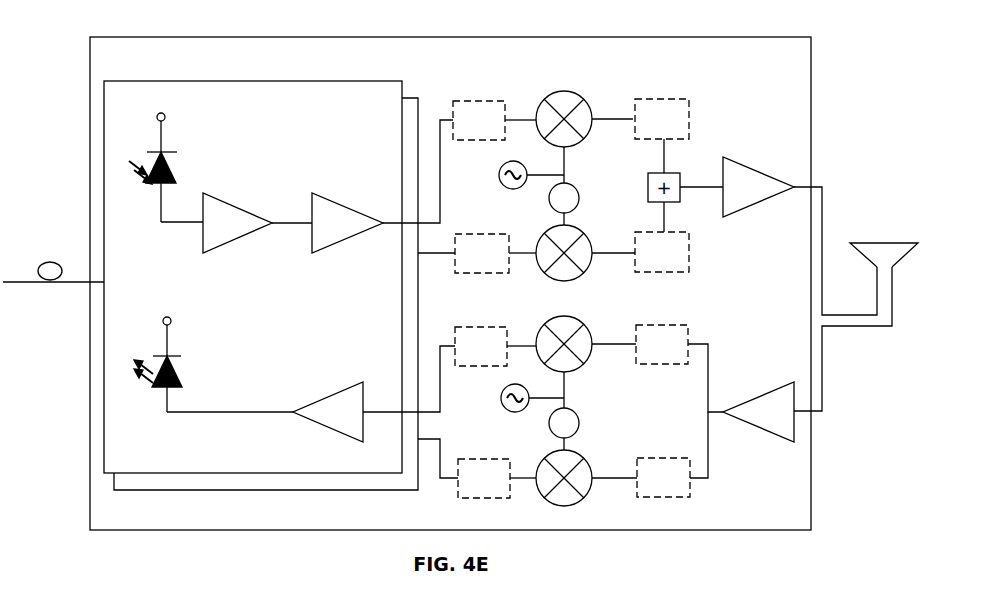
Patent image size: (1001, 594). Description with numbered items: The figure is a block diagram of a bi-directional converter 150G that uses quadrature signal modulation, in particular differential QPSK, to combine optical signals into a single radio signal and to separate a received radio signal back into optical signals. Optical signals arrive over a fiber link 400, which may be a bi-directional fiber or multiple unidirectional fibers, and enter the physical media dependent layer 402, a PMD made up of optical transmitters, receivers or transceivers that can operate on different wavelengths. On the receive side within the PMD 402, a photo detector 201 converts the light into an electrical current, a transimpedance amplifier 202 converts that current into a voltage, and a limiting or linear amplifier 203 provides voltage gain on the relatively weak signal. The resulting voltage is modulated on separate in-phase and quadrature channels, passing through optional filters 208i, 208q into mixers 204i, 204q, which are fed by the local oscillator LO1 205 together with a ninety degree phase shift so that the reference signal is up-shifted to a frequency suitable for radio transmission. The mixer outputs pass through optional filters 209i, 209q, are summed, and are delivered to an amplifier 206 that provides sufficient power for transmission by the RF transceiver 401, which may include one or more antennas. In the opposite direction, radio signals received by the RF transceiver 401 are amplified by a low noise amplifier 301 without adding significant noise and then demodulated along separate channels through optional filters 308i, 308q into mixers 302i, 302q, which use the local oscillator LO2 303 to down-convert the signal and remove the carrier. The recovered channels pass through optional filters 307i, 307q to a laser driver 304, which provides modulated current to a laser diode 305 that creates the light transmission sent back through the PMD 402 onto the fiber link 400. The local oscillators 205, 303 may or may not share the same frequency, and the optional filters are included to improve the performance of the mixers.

The converter 150G is at (450, 283).
The fiber link 400 is at (53, 295).
The physical media dependent (PMD) layer 402 is at (261, 276).
The photo detector 201 is at (172, 167).
The transimpedance amplifier 202 is at (237, 234).
The limiting or linear amplifier 203 is at (347, 214).
The mixer 204i is at (564, 108).
The mixer 204q is at (580, 258).
The local oscillator LO1 205 is at (521, 186).
The amplifier 206 is at (758, 182).
The filter 208i is at (479, 110).
The filter 208q is at (482, 242).
The filter 209i is at (662, 108).
The filter 209q is at (684, 252).
The low noise amplifier 301 is at (758, 408).
The mixer 302i is at (580, 350).
The mixer 302q is at (577, 487).
The local oscillator LO2 303 is at (521, 411).
The laser driver 304 is at (318, 410).
The laser diode 305 is at (212, 365).
The filter 307i is at (481, 334).
The filter 307q is at (484, 492).
The filter 308i is at (662, 333).
The filter 308q is at (663, 491).
The RF transceiver 401 is at (884, 245).